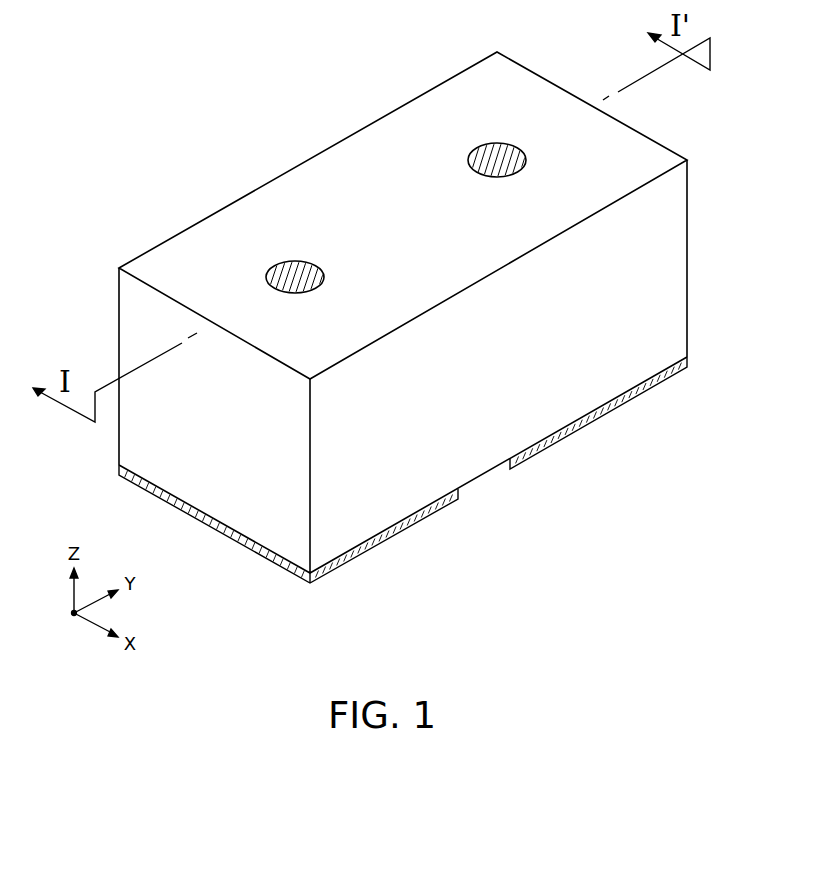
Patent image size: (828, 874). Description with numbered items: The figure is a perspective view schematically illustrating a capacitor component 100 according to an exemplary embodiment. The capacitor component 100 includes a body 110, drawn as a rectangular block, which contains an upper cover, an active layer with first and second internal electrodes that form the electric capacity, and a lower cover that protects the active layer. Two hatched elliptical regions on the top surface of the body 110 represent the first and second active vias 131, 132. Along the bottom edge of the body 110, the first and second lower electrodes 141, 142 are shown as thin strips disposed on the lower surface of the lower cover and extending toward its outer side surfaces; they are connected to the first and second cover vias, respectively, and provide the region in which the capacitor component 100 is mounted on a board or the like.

The capacitor component 100 is at (173, 51).
The body 110 is at (352, 175).
The first active via 131 is at (280, 263).
The second active via 132 is at (488, 154).
The first lower electrode 141 is at (385, 537).
The second lower electrode 142 is at (590, 425).